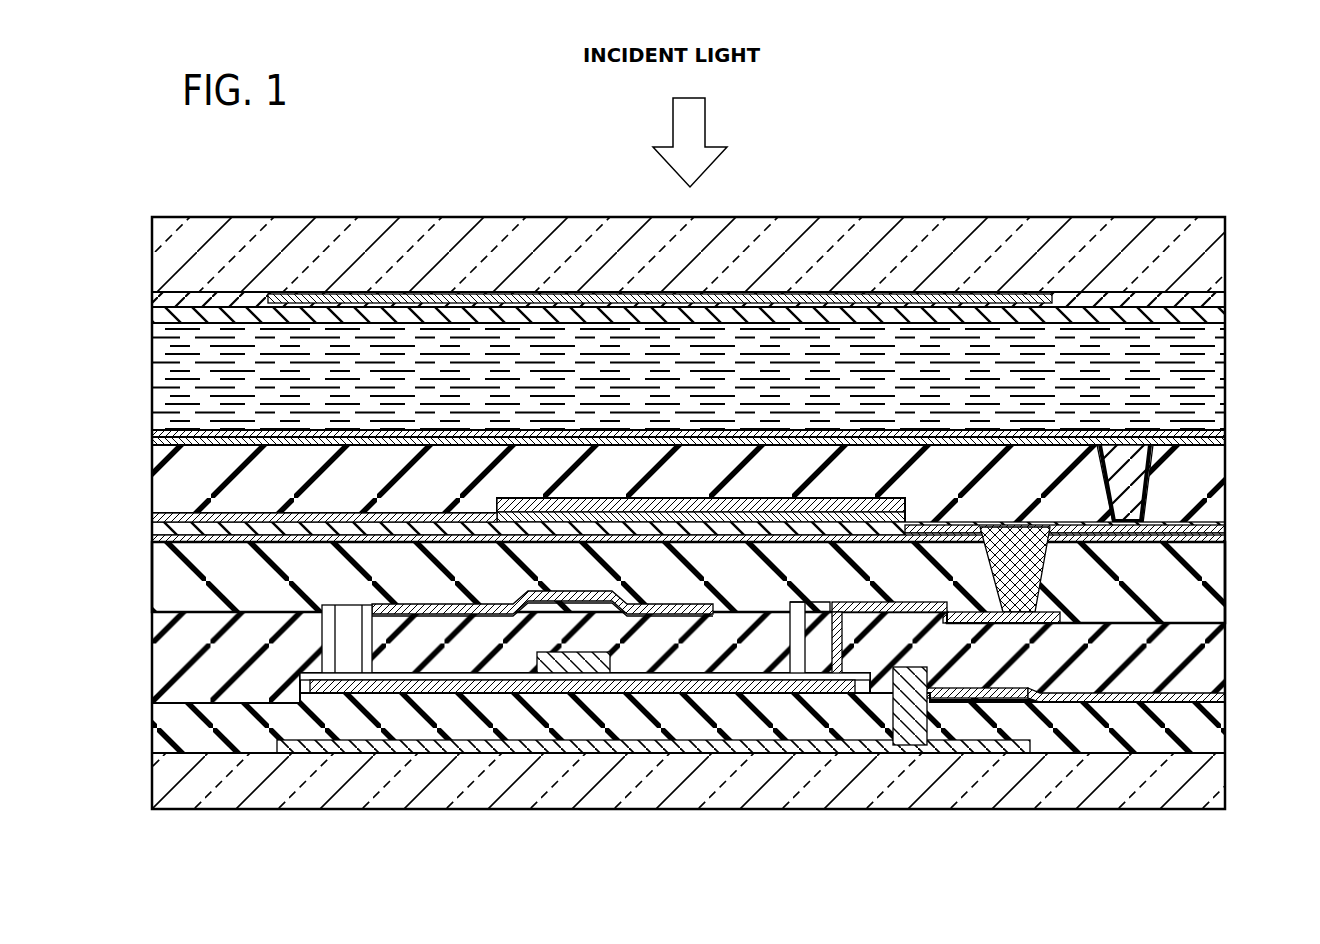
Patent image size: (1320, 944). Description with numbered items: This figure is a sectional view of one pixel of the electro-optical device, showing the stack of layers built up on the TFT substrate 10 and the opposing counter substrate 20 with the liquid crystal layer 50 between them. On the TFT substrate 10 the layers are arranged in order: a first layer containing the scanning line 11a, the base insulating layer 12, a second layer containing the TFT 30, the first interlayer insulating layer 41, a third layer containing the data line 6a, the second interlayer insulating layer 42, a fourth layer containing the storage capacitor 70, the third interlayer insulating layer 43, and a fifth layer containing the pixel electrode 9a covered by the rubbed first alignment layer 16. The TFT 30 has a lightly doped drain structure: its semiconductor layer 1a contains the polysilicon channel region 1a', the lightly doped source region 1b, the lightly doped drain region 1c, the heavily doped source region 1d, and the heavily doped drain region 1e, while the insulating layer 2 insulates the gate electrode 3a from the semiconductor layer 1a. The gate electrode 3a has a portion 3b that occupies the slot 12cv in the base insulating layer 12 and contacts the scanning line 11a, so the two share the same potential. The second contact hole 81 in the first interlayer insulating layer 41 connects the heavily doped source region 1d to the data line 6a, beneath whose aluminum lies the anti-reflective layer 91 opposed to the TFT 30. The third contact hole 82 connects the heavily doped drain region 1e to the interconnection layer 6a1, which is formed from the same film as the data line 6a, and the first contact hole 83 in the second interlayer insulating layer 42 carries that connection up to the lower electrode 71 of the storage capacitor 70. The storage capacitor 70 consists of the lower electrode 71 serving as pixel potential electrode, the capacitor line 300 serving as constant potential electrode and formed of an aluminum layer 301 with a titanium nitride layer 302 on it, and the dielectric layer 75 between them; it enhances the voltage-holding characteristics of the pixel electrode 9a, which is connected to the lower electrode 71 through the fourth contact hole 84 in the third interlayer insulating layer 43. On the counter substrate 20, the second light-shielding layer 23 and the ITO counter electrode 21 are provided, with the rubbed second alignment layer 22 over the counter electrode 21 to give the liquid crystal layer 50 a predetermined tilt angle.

The TFT substrate 10 is at (1215, 795).
The base insulating layer 12 is at (1218, 730).
The slot 12cv is at (915, 727).
The scanning line 11a is at (840, 755).
The semiconductor layer 1a is at (582, 762).
The channel region 1a' is at (573, 764).
The lightly doped source region 1b is at (518, 694).
The lightly doped drain region 1c is at (627, 694).
The heavily doped source region 1d is at (457, 694).
The heavily doped drain region 1e is at (700, 694).
The insulating layer 2 is at (713, 671).
The gate electrode 3a is at (575, 657).
The portion of gate electrode 3b is at (927, 667).
The TFT 30 is at (455, 841).
The first interlayer insulating layer 41 is at (1212, 648).
The second interlayer insulating layer 42 is at (1215, 560).
The third interlayer insulating layer 43 is at (1218, 506).
The data line 6a is at (520, 592).
The interconnection layer 6a1 is at (933, 603).
The storage capacitor 70 is at (623, 547).
The lower electrode 71 is at (740, 537).
The dielectric layer 75 is at (683, 523).
The capacitor line 300 is at (910, 505).
The aluminum layer 301 is at (767, 518).
The titanium nitride layer 302 is at (855, 502).
The second contact hole 81 is at (350, 619).
The third contact hole 82 is at (828, 645).
The first contact hole 83 is at (1048, 588).
The fourth contact hole 84 is at (1148, 472).
The anti-reflective layer 91 is at (465, 617).
The pixel electrode 9a is at (1187, 443).
The first alignment layer 16 is at (1215, 440).
The liquid crystal layer 50 is at (1215, 364).
The second alignment layer 22 is at (1215, 317).
The counter electrode 21 is at (1215, 301).
The second light-shielding layer 23 is at (945, 297).
The counter substrate 20 is at (1226, 240).